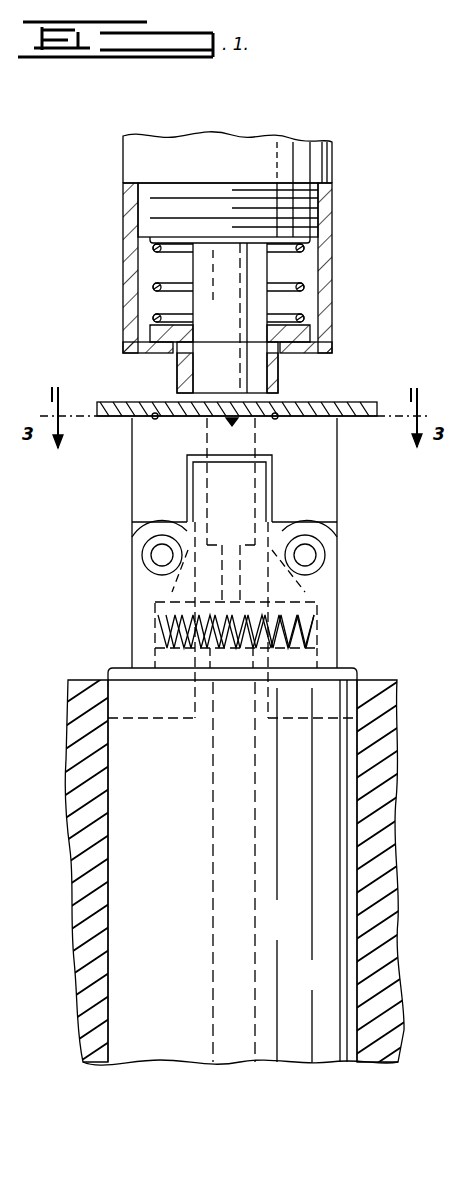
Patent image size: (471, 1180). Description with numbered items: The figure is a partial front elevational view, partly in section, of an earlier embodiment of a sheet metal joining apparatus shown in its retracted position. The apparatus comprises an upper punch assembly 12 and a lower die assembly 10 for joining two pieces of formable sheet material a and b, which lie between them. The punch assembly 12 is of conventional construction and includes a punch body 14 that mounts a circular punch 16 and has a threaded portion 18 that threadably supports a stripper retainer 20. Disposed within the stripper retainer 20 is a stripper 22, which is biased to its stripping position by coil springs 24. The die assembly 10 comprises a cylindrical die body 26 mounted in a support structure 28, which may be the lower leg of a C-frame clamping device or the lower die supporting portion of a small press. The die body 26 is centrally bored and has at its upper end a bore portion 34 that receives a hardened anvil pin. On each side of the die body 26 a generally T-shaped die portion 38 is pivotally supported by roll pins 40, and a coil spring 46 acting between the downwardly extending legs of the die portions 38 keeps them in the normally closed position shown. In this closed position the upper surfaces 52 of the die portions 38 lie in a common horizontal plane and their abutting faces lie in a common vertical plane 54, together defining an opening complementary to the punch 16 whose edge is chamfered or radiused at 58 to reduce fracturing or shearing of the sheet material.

The die assembly 10 is at (115, 658).
The punch assembly 12 is at (352, 226).
The punch body 14 is at (252, 145).
The circular punch 16 is at (240, 373).
The threaded portion 18 is at (155, 210).
The stripper retainer 20 is at (330, 253).
The stripper 22 is at (180, 372).
The coil springs 24 is at (155, 287).
The cylindrical die body 26 is at (185, 940).
The support structure 28 is at (388, 930).
The bore portion 34 is at (260, 472).
The die portion 38 is at (150, 512).
The roll pins 40 is at (160, 556).
The coil spring 46 is at (330, 604).
The upper surfaces 52 is at (155, 418).
The vertical plane 54 is at (232, 462).
The chamfered or radiused edge 58 is at (232, 418).
The sheet material piece a is at (355, 400).
The sheet material piece b is at (362, 418).